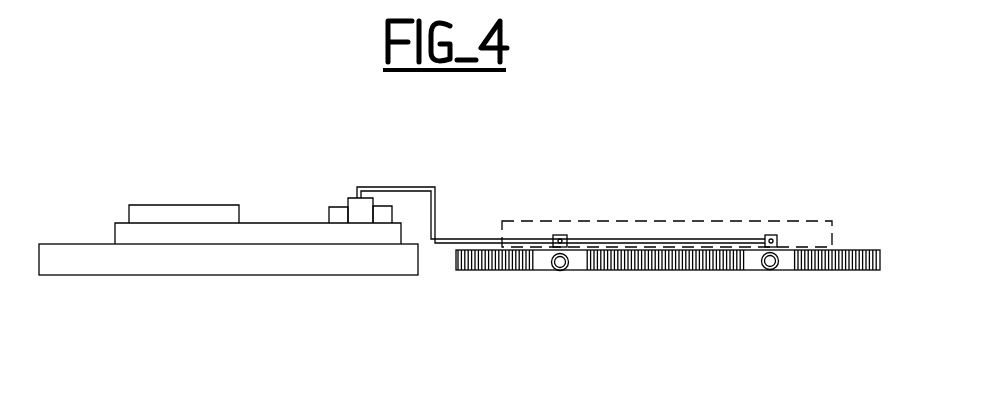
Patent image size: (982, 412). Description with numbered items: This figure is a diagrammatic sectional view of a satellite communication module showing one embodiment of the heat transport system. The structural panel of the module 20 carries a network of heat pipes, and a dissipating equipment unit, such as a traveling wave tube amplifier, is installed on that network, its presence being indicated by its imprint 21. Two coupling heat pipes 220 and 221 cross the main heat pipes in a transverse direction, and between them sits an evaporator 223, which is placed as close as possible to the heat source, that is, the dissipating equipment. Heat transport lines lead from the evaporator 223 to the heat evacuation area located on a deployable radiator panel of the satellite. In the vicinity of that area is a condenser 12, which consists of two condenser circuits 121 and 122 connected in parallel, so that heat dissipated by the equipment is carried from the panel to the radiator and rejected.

The panel of the communication module 20 is at (251, 276).
The imprint of dissipating equipment unit 21 is at (128, 205).
The coupling heat pipe 220 is at (327, 206).
The evaporator 223 is at (352, 196).
The coupling heat pipe 221 is at (386, 205).
The condenser 12 is at (670, 219).
The condenser circuit 121 is at (562, 234).
The condenser circuit 122 is at (770, 234).